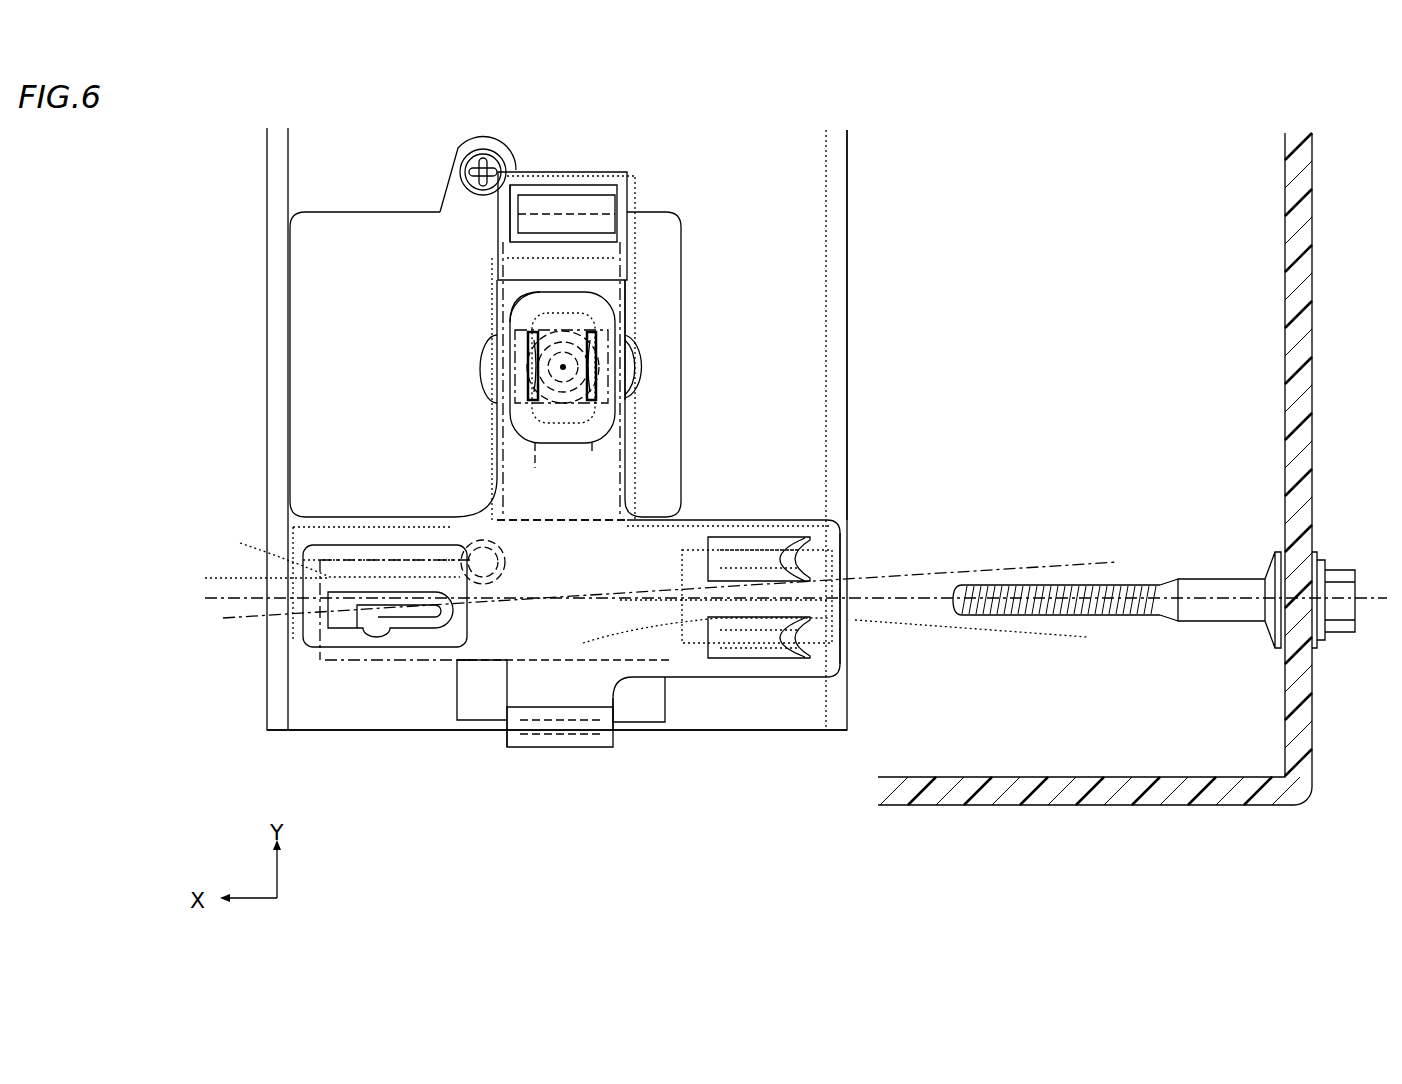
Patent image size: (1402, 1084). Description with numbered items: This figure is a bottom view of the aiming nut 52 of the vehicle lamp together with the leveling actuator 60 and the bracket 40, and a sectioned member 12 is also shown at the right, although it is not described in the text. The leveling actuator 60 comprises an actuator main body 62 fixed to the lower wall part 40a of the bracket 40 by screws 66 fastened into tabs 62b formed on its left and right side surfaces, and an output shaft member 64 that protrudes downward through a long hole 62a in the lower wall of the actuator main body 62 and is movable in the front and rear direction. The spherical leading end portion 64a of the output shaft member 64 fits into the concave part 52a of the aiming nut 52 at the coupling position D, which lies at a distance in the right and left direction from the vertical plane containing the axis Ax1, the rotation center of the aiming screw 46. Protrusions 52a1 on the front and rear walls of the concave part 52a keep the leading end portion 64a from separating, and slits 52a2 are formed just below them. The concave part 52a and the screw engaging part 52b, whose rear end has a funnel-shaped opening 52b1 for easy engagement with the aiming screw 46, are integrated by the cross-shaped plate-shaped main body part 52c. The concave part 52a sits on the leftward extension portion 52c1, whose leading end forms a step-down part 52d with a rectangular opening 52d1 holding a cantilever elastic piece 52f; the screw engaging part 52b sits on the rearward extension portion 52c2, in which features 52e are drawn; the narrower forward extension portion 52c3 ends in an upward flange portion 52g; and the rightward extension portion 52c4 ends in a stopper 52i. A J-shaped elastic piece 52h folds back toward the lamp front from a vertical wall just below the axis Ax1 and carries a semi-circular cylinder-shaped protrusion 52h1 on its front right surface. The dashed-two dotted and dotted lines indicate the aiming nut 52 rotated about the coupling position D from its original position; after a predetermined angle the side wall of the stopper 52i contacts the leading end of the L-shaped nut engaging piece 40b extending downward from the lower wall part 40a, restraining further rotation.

The vehicle body panel 12 is at (1247, 807).
The bracket 40 is at (848, 238).
The lower wall part 40a is at (810, 186).
The nut engaging piece 40b is at (650, 706).
The aiming screw 46 is at (1135, 583).
The aiming nut 52 is at (823, 498).
The concave part 52a is at (517, 357).
The protrusions 52a1 is at (530, 350).
The slits 52a2 is at (550, 313).
The screw engaging part 52b is at (685, 630).
The funnel-shaped opening 52b1 is at (930, 557).
The plate-shaped main body part 52c is at (603, 553).
The leftward extension portion 52c1 is at (622, 333).
The rearward extension portion 52c2 is at (688, 653).
The forward extension portion 52c3 is at (392, 555).
The rightward extension portion 52c4 is at (533, 670).
The step-down part 52d is at (605, 250).
The rectangular opening 52d1 is at (513, 223).
The engagement recess 52e is at (760, 540).
The elastic piece 52f is at (558, 202).
The flange portion 52g is at (331, 545).
The elastic piece 52h is at (427, 625).
The semi-circular cylinder-shaped protrusion 52h1 is at (380, 633).
The stopper 52i is at (550, 740).
The leveling actuator 60 is at (683, 340).
The actuator main body 62 is at (330, 315).
The long hole 62a is at (640, 388).
The tabs 62b is at (455, 175).
The output shaft member 64 is at (537, 467).
The leading end portion 64a is at (593, 459).
The screws 66 is at (480, 158).
The coupling position D is at (560, 368).
The axis Ax1 is at (950, 634).